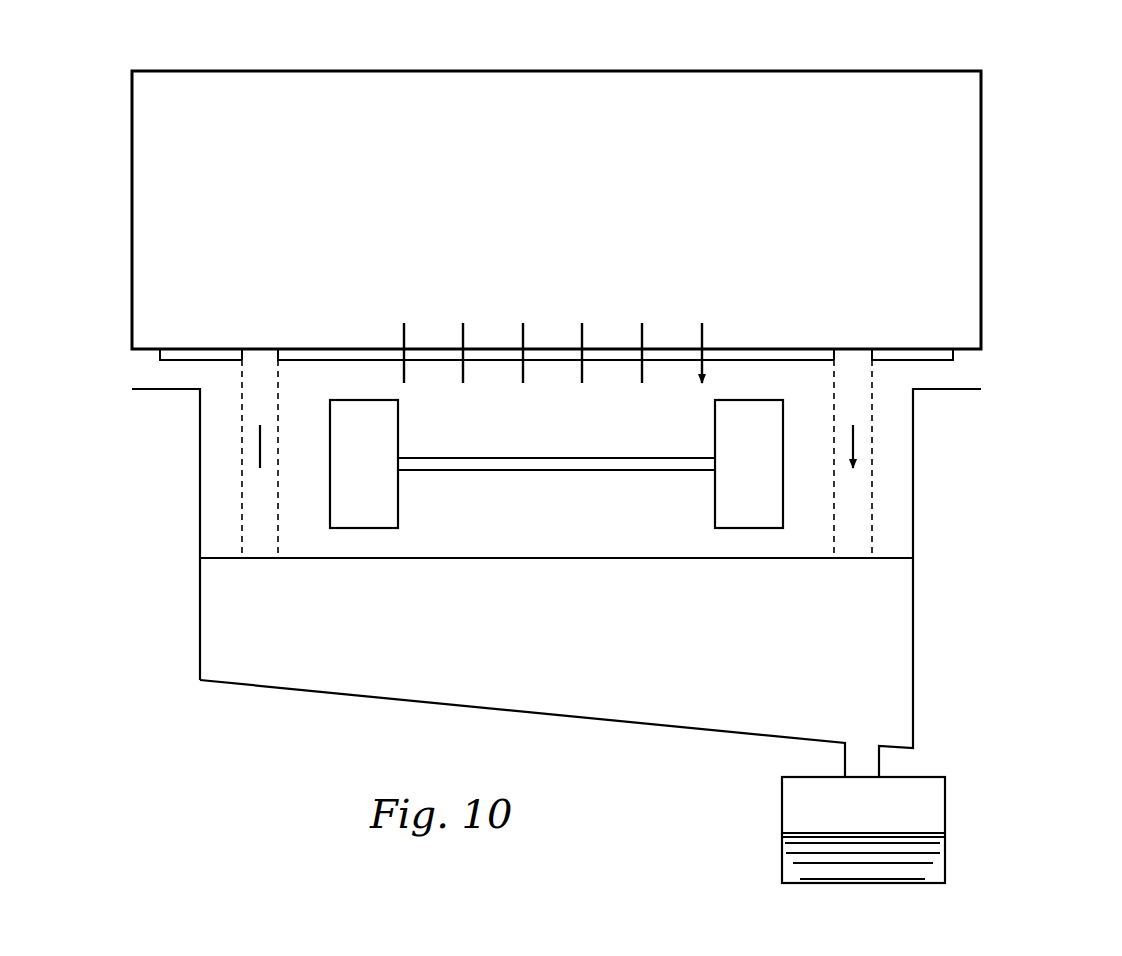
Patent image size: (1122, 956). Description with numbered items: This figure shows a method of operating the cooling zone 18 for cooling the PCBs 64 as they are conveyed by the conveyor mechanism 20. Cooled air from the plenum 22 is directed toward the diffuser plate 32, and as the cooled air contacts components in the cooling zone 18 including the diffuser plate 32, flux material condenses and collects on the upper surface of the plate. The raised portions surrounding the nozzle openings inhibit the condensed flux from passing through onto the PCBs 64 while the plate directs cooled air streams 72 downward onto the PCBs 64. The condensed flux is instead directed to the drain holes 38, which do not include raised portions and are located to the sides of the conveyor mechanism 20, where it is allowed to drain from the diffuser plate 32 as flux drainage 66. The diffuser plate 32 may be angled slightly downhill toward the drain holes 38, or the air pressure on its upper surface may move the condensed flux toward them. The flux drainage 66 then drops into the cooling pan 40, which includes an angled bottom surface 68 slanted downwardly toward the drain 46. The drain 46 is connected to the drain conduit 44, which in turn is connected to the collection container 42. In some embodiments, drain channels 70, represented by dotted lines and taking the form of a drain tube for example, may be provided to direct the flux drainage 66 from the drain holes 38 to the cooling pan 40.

The cooling zone 18 is at (1042, 166).
The conveyor mechanism 20 is at (716, 437).
The plenum 22 is at (808, 71).
The diffuser plate 32 is at (735, 356).
The drain holes 38 is at (260, 354).
The cooling pan 40 is at (913, 653).
The collection container 42 is at (945, 818).
The drain conduit 44 is at (838, 762).
The drain 46 is at (865, 750).
The PCBs 64 is at (590, 456).
The flux drainage 66 is at (258, 443).
The angled bottom surface 68 is at (538, 697).
The drain channels 70 is at (240, 488).
The cooled air streams 72 is at (404, 330).